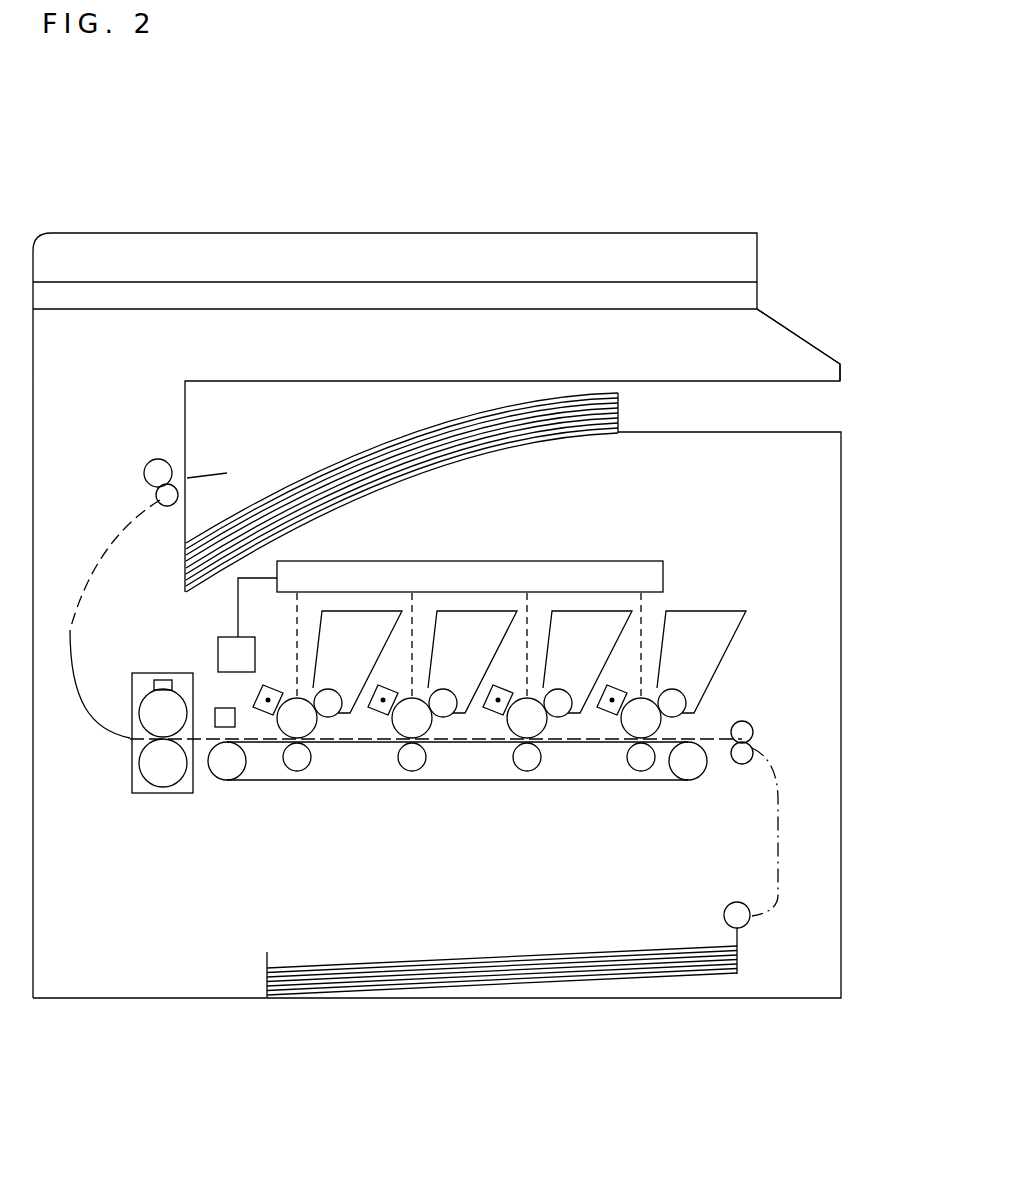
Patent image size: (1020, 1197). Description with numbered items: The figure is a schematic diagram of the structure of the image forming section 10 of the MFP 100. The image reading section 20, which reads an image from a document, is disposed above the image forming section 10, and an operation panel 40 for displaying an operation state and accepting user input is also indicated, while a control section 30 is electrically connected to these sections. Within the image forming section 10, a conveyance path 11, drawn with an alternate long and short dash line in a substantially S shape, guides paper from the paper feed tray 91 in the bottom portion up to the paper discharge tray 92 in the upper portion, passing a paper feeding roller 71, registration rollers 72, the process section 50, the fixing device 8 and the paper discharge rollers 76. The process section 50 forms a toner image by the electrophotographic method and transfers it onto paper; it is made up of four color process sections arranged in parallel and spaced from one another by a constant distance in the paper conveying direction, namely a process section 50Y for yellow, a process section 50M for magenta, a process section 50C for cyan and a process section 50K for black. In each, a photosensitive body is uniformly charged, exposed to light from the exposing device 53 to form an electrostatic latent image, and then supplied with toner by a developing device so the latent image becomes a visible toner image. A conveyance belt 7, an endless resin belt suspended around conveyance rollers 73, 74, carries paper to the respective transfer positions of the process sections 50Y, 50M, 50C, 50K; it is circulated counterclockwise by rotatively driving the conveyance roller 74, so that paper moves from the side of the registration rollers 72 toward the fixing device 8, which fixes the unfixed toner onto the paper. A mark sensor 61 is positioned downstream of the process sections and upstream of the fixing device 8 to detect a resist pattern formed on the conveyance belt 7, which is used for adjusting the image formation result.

The MFP 100 is at (665, 200).
The image reading section 20 is at (150, 232).
The operation panel 40 is at (805, 338).
The image forming section 10 is at (787, 498).
The paper discharge tray 92 is at (392, 482).
The paper discharge rollers 76 is at (156, 460).
The conveyance path 11 is at (777, 815).
The exposing device 53 is at (598, 560).
The control section 30 is at (223, 638).
The mark sensor 61 is at (223, 707).
The fixing device 8 is at (163, 794).
The conveyance belt 7 is at (267, 782).
The conveyance roller 74 is at (222, 768).
The conveyance roller 73 is at (690, 773).
The registration rollers 72 is at (742, 726).
The paper feeding roller 71 is at (725, 913).
The paper feed tray 91 is at (552, 978).
The process section 50 is at (499, 765).
The process section 50Y is at (327, 783).
The process section 50M is at (425, 783).
The process section 50C is at (532, 783).
The process section 50K is at (668, 742).